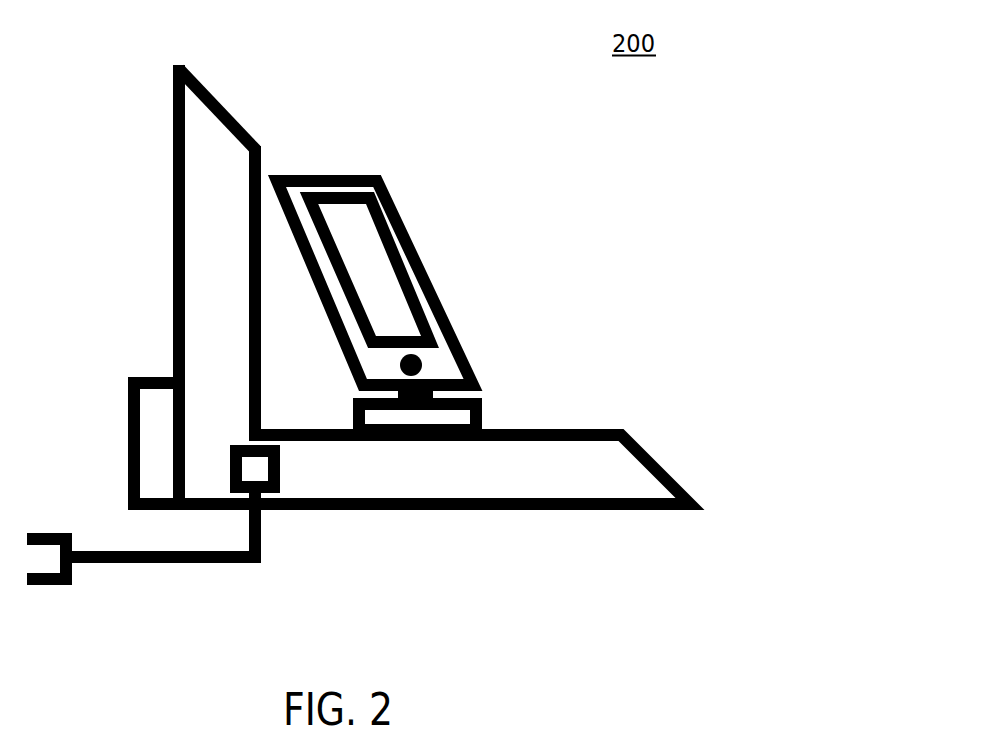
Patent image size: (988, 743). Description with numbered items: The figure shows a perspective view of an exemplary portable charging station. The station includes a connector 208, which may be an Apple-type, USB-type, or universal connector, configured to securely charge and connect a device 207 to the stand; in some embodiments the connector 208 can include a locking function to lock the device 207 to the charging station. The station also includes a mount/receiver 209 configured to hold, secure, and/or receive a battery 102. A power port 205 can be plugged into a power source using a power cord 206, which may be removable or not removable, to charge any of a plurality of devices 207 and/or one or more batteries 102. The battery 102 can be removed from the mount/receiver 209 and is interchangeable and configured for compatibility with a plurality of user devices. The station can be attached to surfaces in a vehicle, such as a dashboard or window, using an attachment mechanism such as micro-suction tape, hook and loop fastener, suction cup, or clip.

The mount/receiver 209 is at (150, 363).
The battery 102 is at (152, 437).
The power port 205 is at (295, 475).
The power cord 206 is at (120, 583).
The device 207 is at (433, 234).
The connector 208 is at (497, 404).